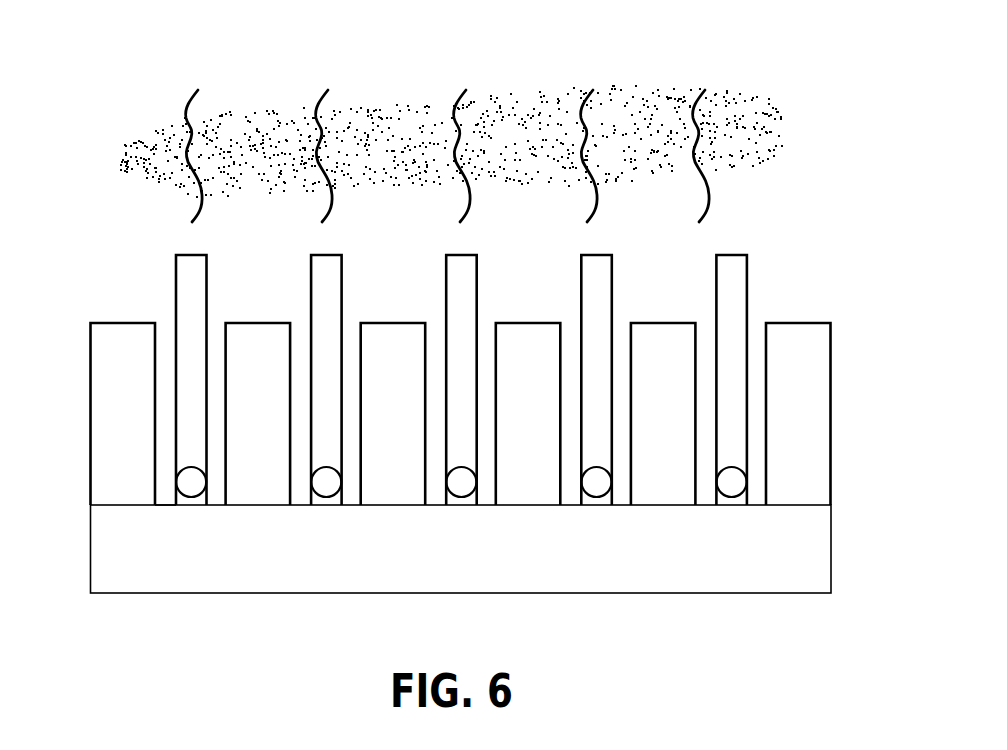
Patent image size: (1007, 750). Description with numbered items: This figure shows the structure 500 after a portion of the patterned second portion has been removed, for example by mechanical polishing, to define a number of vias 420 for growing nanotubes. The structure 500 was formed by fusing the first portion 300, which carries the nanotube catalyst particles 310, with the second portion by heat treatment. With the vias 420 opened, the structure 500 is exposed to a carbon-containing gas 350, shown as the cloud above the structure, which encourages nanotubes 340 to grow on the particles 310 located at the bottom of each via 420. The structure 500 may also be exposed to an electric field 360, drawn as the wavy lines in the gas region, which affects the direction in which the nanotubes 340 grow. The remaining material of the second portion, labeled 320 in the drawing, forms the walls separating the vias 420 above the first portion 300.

The first portion 300 is at (110, 564).
The particles 310 is at (185, 483).
The dielectric layer 320 is at (105, 467).
The nanotubes 340 is at (183, 323).
The carbon-containing gas 350 is at (748, 123).
The electric field 360 is at (192, 103).
The vias 420 is at (162, 427).
The structure 500 is at (849, 144).